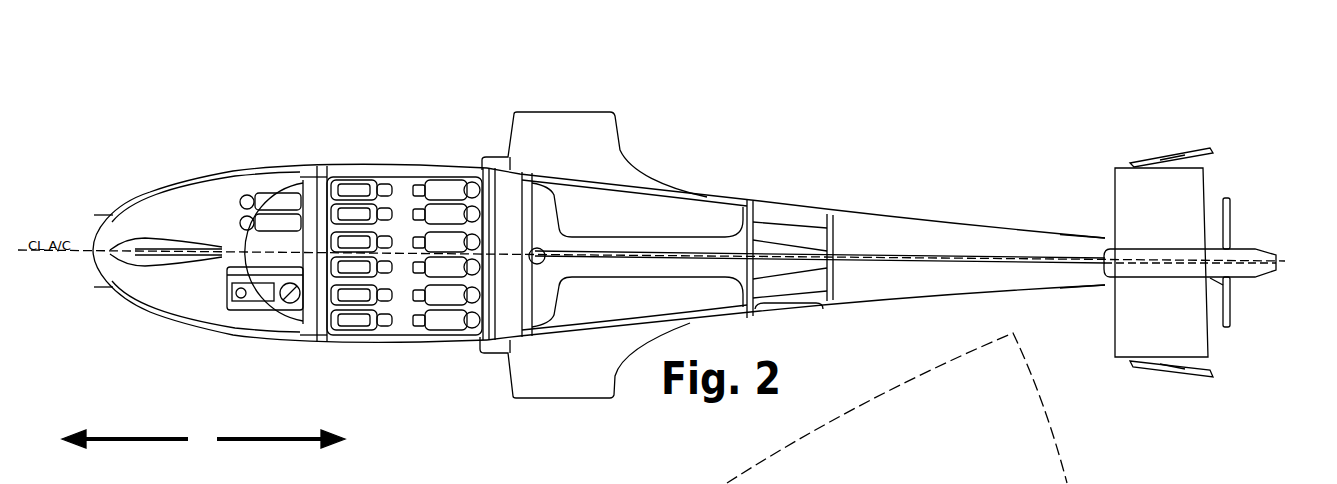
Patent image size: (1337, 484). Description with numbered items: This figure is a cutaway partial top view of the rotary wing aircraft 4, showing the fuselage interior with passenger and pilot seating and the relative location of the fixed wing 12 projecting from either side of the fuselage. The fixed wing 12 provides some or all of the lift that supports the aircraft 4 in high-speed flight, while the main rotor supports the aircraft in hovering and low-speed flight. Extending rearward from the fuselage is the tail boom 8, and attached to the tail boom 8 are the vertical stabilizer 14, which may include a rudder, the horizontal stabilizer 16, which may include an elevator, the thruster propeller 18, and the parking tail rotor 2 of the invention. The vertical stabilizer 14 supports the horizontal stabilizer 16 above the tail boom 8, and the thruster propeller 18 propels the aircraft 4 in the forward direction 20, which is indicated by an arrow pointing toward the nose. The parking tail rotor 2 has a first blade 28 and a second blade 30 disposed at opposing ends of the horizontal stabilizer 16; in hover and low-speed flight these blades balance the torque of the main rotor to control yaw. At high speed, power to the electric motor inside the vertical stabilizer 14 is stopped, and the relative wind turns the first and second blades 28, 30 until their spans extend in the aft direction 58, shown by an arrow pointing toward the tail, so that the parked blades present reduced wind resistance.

The parking tail rotor 2 is at (1083, 104).
The rotary wing aircraft 4 is at (285, 165).
The tail boom 8 is at (878, 220).
The fixed wing 12 is at (540, 132).
The vertical stabilizer 14 is at (1123, 242).
The horizontal stabilizer 16 is at (1133, 188).
The thruster propeller 18 is at (1233, 250).
The forward direction 20 is at (155, 438).
The first blade 28 is at (1185, 376).
The second blade 30 is at (1183, 151).
The aft direction 58 is at (263, 438).